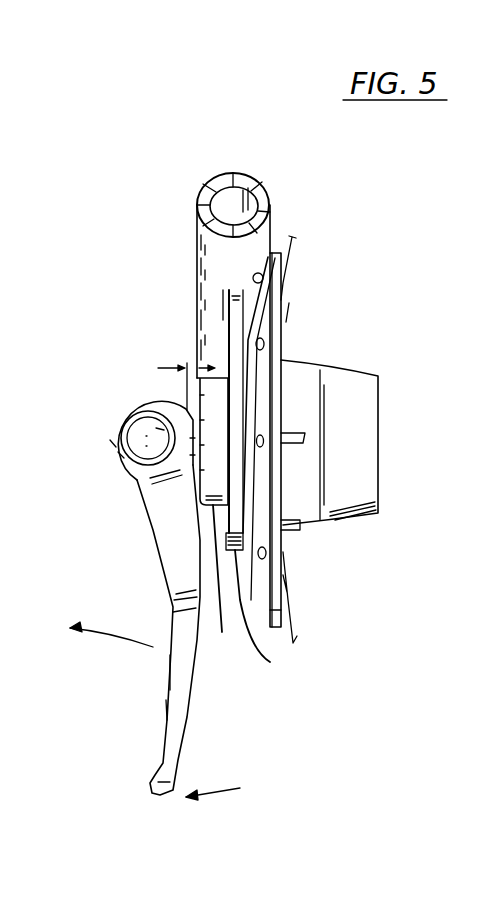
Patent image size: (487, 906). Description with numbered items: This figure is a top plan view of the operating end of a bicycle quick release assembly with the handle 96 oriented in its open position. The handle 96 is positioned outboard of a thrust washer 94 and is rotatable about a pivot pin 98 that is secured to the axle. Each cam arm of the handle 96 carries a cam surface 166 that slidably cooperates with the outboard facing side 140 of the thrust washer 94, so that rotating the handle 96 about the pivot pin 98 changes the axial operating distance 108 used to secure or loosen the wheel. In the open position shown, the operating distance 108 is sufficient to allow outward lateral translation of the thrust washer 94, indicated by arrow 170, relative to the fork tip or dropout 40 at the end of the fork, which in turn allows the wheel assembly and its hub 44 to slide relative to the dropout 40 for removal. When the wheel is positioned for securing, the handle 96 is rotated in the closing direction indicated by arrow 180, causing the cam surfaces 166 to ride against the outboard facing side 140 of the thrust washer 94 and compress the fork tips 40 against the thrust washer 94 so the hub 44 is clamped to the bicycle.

The fork tip 40 is at (267, 469).
The hub 44 is at (308, 372).
The thrust washer 94 is at (223, 586).
The handle 96 is at (166, 706).
The pivot pin 98 is at (137, 450).
The operating distance 108 is at (197, 371).
The outboard facing side 140 is at (187, 391).
The cam surface 166 is at (110, 411).
The arrow 170 is at (240, 788).
The arrow 180 is at (108, 643).